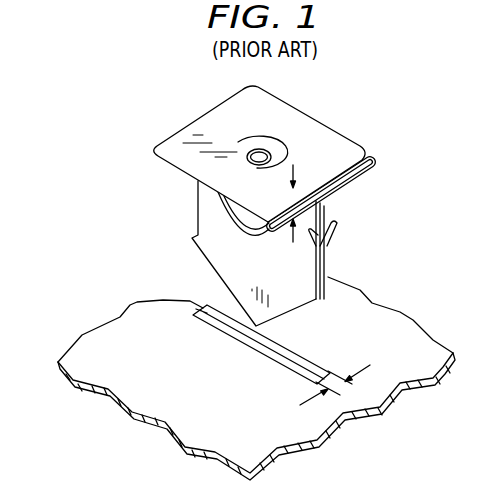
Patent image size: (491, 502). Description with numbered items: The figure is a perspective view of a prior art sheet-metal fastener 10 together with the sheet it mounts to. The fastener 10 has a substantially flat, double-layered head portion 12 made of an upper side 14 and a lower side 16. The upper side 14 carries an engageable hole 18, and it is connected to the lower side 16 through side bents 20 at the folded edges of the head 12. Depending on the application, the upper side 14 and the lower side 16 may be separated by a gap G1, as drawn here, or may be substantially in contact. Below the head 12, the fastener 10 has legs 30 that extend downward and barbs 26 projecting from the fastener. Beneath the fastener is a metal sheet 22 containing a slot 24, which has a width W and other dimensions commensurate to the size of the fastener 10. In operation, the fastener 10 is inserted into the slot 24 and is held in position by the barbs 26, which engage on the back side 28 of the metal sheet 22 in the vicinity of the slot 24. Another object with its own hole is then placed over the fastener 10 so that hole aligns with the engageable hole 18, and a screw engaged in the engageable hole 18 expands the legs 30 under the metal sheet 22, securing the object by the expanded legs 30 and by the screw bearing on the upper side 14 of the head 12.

The sheet-metal fastener 10 is at (382, 139).
The head portion 12 is at (147, 175).
The upper side 14 is at (228, 108).
The lower side 16 is at (355, 175).
The engageable hole 18 is at (263, 155).
The side bents 20 is at (325, 133).
The metal sheet 22 is at (400, 323).
The slot 24 is at (137, 302).
The barbs 26 is at (334, 237).
The back side 28 is at (160, 398).
The legs 30 is at (230, 247).
The gap G1 is at (293, 237).
The width W is at (370, 365).